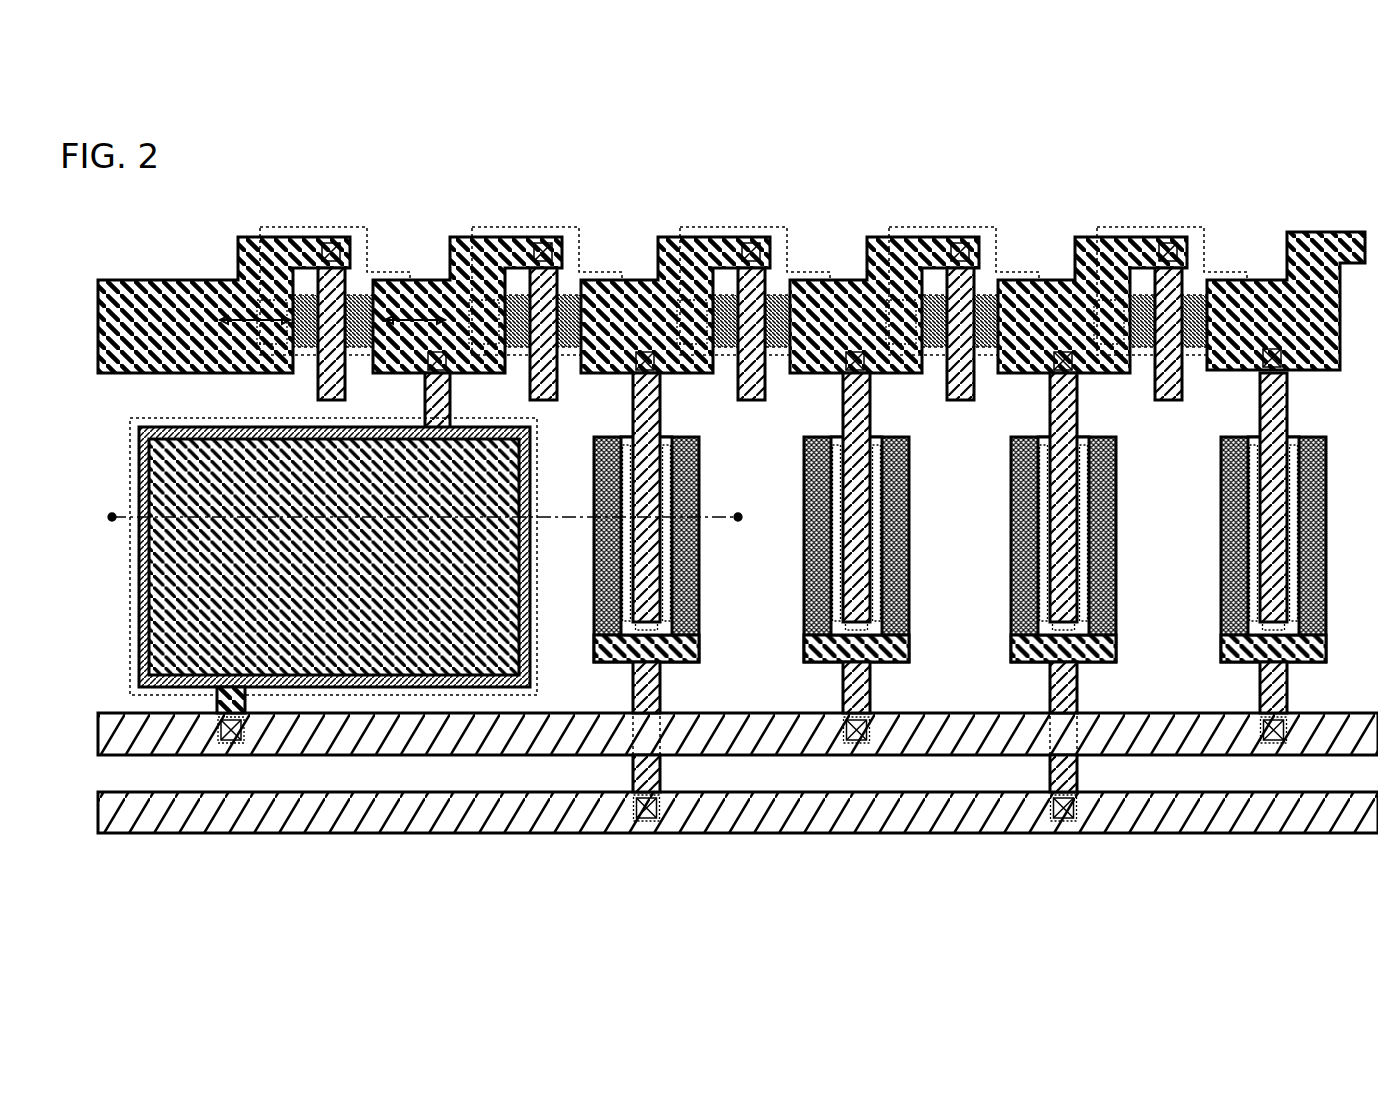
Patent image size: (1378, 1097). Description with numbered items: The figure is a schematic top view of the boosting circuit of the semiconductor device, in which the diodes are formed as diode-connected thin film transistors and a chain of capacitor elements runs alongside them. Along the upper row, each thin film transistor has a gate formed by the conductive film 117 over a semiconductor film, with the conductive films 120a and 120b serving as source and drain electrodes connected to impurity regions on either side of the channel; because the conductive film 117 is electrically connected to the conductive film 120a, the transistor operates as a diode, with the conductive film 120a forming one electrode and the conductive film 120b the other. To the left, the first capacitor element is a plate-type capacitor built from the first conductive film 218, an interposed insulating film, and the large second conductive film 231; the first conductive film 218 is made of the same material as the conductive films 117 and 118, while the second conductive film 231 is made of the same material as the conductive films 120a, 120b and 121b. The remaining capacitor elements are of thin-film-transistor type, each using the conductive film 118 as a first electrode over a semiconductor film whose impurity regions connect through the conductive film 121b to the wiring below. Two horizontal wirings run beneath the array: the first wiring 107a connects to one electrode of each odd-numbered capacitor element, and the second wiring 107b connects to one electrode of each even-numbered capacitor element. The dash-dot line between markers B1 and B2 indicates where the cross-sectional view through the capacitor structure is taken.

The conductive film 120a is at (200, 278).
The conductive film 120b is at (420, 278).
The conductive film 117 is at (316, 388).
The conductive film 118 is at (633, 410).
The first conductive film 218 is at (424, 395).
The second conductive film 231 is at (150, 597).
The conductive film 121b is at (633, 683).
The first wiring 107a is at (760, 713).
The second wiring 107b is at (760, 835).
The cross-section line end B1 is at (408, 521).
The cross-section line end B2 is at (752, 521).